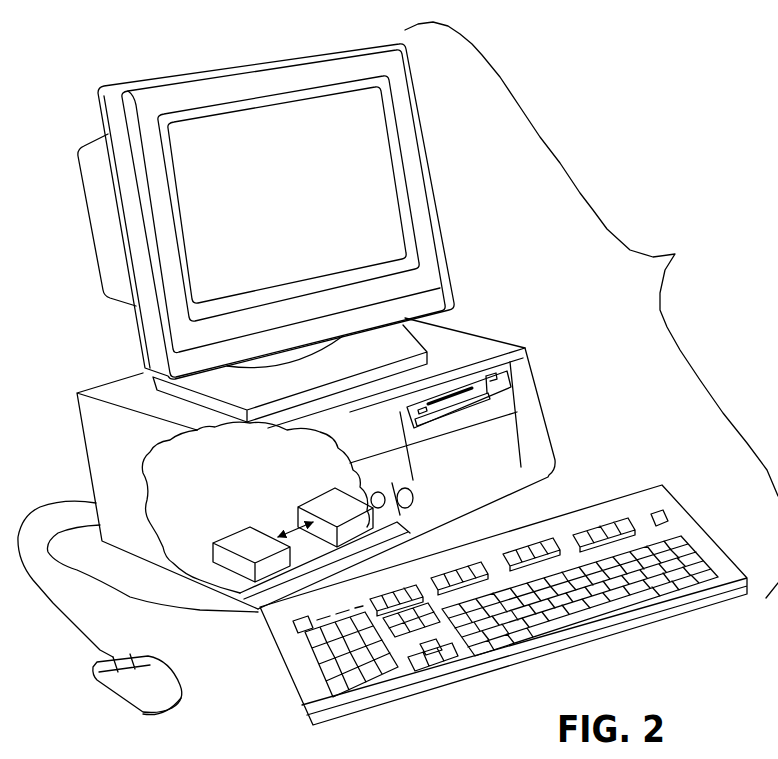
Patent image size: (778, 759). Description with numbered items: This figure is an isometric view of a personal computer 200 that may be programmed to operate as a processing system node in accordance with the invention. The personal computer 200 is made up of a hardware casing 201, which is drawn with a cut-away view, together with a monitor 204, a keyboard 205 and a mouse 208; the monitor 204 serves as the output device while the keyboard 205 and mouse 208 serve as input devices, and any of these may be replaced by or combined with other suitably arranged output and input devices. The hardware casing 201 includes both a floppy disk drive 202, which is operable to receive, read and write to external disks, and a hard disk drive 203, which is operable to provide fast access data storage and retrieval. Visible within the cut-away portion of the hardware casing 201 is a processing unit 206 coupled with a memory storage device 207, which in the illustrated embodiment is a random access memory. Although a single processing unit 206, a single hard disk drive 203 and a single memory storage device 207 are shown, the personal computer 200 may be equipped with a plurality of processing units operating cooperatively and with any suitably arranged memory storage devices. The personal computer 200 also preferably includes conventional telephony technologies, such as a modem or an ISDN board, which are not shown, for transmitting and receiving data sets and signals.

The personal computer 200 is at (591, 310).
The hardware casing 201 is at (526, 347).
The floppy disk drive 202 is at (512, 396).
The hard disk drive 203 is at (472, 428).
The monitor 204 is at (137, 324).
The keyboard 205 is at (662, 485).
The processing unit 206 is at (300, 506).
The memory storage device 207 is at (222, 543).
The mouse 208 is at (97, 660).